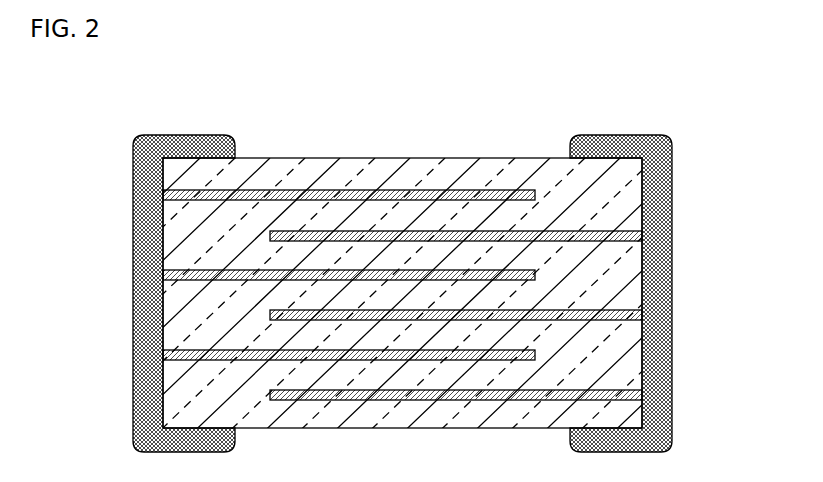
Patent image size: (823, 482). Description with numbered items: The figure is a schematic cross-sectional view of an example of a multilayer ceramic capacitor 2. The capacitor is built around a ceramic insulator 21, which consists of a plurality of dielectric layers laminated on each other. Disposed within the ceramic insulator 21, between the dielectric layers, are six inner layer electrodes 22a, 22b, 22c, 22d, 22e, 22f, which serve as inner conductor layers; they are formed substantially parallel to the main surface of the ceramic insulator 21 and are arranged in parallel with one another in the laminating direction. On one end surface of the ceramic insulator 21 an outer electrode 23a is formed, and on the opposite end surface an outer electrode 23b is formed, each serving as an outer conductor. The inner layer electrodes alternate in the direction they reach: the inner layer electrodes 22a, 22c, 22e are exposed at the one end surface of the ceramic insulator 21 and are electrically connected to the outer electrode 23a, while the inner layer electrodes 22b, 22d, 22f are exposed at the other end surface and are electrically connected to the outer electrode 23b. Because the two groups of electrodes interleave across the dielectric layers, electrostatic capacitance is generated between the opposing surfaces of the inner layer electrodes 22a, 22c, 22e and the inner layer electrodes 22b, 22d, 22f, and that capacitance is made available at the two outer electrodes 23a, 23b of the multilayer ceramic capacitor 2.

The multilayer ceramic capacitor 2 is at (119, 120).
The ceramic insulator 21 is at (493, 158).
The inner layer electrode 22a is at (535, 195).
The inner layer electrode 22b is at (640, 237).
The inner layer electrode 22c is at (535, 275).
The inner layer electrode 22d is at (640, 317).
The inner layer electrode 22e is at (535, 355).
The inner layer electrode 22f is at (640, 395).
The outer electrode 23a is at (148, 184).
The outer electrode 23b is at (656, 160).